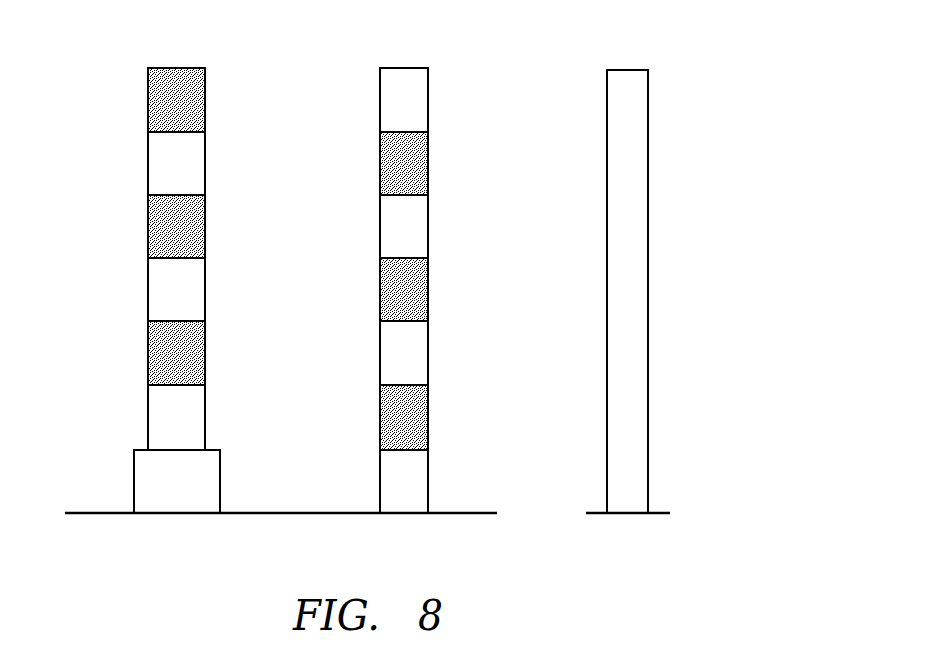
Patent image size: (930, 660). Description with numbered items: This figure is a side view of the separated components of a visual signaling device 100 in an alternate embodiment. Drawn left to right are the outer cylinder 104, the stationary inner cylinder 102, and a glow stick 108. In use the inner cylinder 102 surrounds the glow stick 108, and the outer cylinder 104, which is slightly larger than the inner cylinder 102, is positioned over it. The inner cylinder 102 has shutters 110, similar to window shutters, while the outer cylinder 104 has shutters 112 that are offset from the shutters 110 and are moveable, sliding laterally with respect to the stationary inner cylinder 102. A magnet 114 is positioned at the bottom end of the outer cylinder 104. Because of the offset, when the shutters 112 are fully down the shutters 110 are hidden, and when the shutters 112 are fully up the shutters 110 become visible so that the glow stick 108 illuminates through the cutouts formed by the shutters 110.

The visual signaling device 100 is at (708, 89).
The stationary inner cylinder 102 is at (382, 353).
The outer cylinder 104 is at (150, 290).
The glow stick 108 is at (648, 243).
The shutters of inner cylinder 110 is at (382, 163).
The shutters of outer cylinder 112 is at (150, 102).
The magnet 114 is at (135, 480).